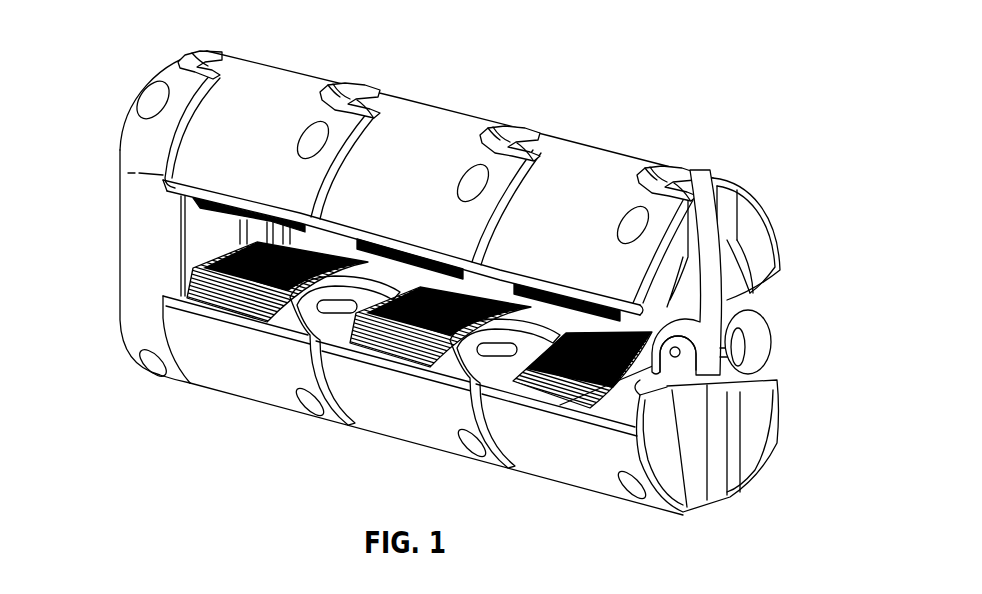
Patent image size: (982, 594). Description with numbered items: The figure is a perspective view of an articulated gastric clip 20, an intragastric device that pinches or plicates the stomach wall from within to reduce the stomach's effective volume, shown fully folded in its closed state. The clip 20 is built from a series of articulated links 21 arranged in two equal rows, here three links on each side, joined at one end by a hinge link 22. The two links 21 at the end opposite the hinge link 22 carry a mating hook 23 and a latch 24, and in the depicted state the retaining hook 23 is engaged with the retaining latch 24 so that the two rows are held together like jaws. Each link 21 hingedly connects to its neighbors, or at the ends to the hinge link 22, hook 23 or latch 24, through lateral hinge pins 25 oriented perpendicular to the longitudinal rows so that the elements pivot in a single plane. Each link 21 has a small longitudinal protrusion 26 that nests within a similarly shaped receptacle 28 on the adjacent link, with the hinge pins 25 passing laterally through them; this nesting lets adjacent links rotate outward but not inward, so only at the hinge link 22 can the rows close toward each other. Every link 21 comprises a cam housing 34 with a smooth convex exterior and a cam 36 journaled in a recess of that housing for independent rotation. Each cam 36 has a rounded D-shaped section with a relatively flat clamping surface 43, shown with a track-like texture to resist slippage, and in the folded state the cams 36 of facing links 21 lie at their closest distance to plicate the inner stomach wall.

The articulated gastric clip 20 is at (145, 50).
The articulated link 21 is at (455, 108).
The hinge link 22 is at (130, 267).
The mating hook 23 is at (767, 343).
The latch 24 is at (712, 303).
The hinge pin 25 is at (310, 137).
The longitudinal protrusion 26 is at (377, 92).
The receptacle 28 is at (340, 90).
The cam housing 34 is at (256, 152).
The cam 36 is at (291, 300).
The clamping surface 43 is at (238, 242).